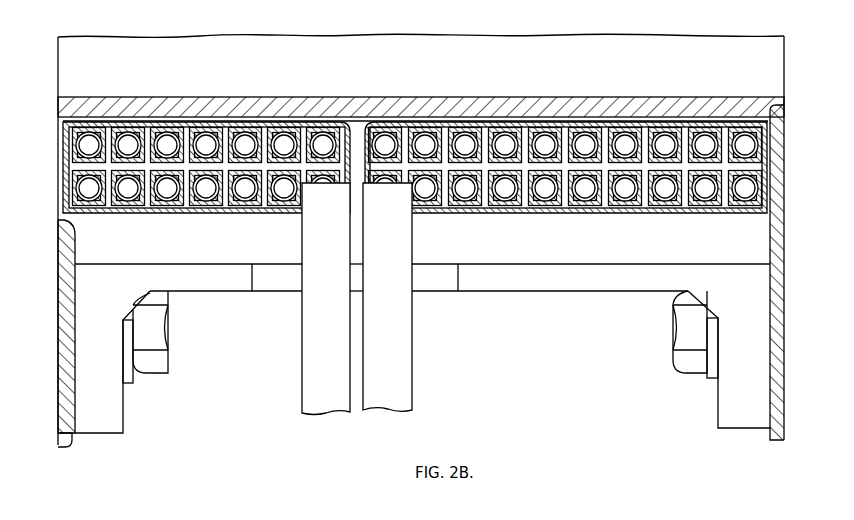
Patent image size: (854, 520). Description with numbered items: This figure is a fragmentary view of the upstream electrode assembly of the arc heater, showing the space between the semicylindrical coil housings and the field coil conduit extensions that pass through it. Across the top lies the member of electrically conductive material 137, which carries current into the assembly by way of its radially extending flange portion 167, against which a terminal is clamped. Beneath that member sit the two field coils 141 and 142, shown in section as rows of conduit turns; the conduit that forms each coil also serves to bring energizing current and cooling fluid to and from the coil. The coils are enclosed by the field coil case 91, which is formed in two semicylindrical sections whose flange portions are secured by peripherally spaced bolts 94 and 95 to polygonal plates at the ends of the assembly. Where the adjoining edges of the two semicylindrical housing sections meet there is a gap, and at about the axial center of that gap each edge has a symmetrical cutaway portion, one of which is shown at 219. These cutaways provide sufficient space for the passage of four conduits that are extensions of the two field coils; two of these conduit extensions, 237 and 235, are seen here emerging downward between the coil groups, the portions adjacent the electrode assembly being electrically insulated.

The electrically conductive member 137 is at (417, 102).
The field coil 141 is at (213, 136).
The field coil 142 is at (625, 130).
The conduit extension 237 is at (316, 353).
The conduit extension 235 is at (405, 365).
The field coil case 91 is at (578, 281).
The cutaway portion 219 is at (445, 280).
The bolt 94 is at (153, 367).
The bolt 95 is at (698, 365).
The radially extending flange portion 167 is at (68, 445).